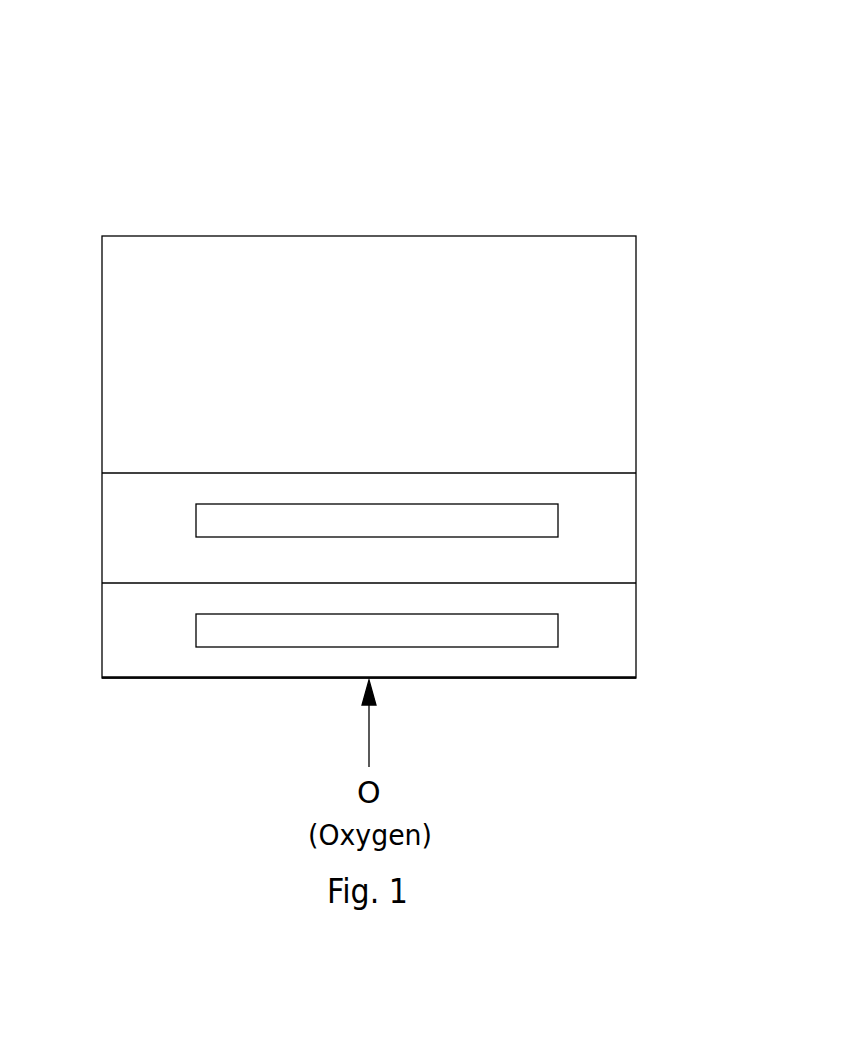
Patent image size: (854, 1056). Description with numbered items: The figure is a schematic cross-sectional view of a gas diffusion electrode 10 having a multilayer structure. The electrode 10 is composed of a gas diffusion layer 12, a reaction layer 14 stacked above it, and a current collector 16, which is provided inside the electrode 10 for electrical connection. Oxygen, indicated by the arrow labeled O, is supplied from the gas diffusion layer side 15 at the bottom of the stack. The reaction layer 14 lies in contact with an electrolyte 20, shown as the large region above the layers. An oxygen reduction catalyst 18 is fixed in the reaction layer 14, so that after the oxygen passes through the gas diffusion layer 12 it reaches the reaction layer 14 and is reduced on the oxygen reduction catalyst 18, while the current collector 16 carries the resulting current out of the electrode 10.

The gas diffusion electrode 10 is at (196, 131).
The electrolyte 20 is at (620, 330).
The reaction layer 14 is at (620, 537).
The gas diffusion layer 12 is at (620, 632).
The oxygen reduction catalyst 18 is at (207, 521).
The current collector 16 is at (212, 627).
The gas diffusion layer side 15 is at (512, 678).